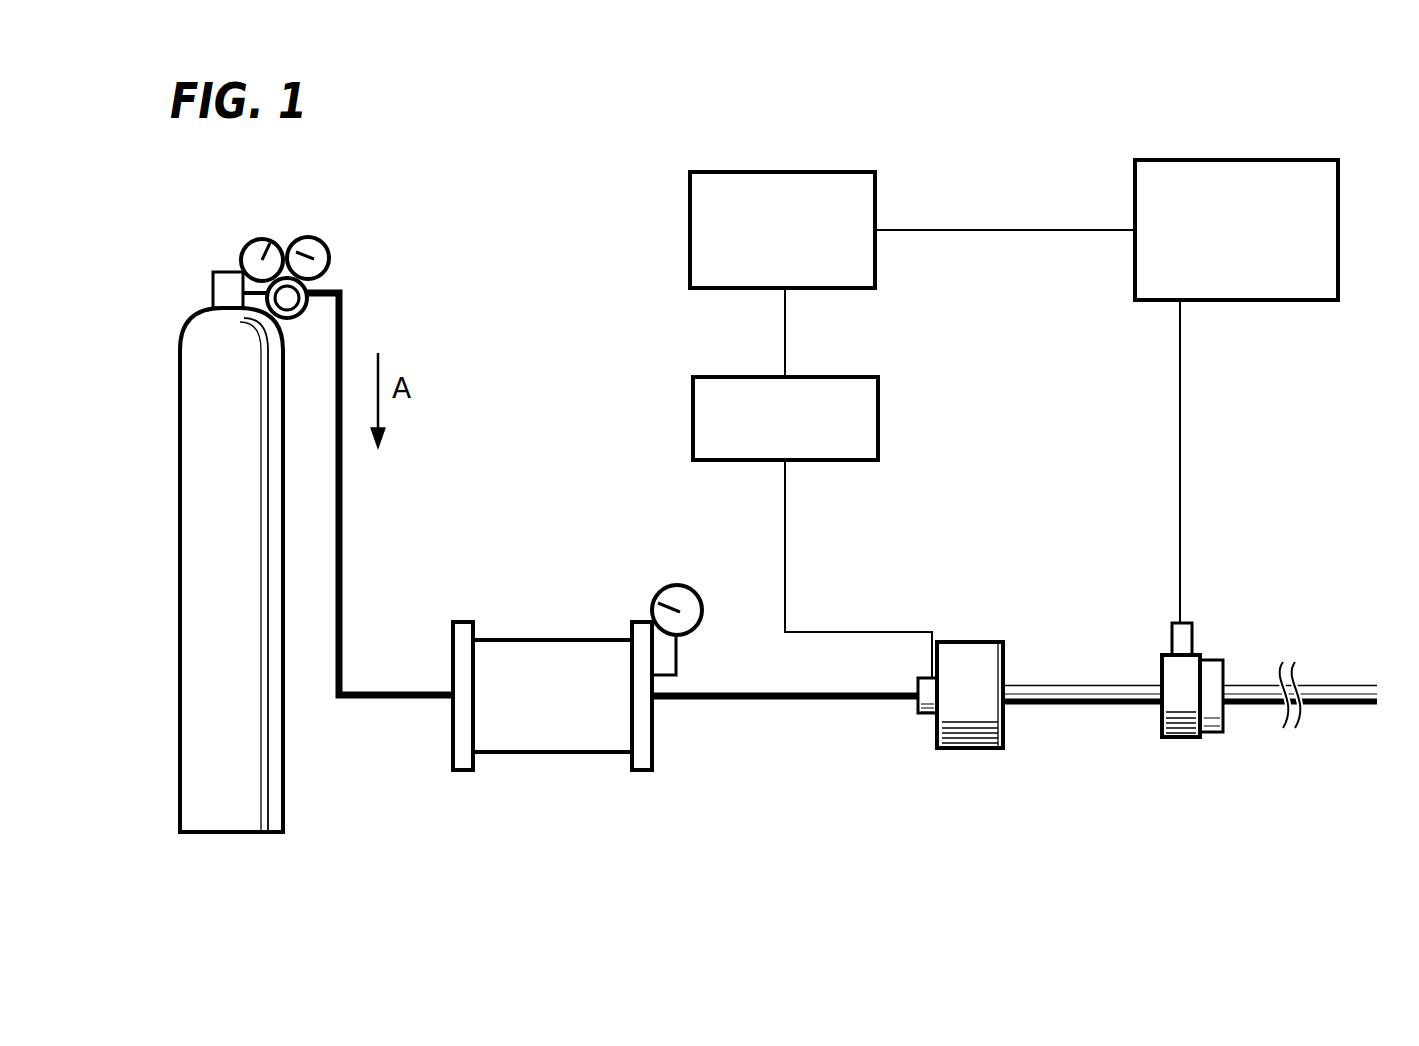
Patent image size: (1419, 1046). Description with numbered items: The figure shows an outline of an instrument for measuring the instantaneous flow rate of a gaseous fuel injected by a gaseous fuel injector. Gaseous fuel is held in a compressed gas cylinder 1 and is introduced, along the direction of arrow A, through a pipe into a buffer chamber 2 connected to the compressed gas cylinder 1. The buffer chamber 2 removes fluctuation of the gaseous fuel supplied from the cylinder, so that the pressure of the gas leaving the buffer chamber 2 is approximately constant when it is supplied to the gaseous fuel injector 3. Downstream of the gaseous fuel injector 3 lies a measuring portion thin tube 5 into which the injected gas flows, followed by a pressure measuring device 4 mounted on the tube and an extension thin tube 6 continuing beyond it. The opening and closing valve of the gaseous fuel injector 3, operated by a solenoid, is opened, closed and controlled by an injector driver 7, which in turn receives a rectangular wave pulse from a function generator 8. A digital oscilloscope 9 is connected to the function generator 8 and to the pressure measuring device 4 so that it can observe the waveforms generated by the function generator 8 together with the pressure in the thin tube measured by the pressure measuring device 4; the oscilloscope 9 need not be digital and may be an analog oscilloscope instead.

The compressed gas cylinder 1 is at (241, 834).
The buffer chamber 2 is at (545, 640).
The gaseous fuel injector 3 is at (976, 750).
The pressure measuring device 4 is at (1180, 740).
The measuring portion thin tube 5 is at (1062, 685).
The extension thin tube 6 is at (1338, 685).
The injector driver 7 is at (880, 410).
The function generator 8 is at (780, 172).
The digital oscilloscope 9 is at (1225, 160).